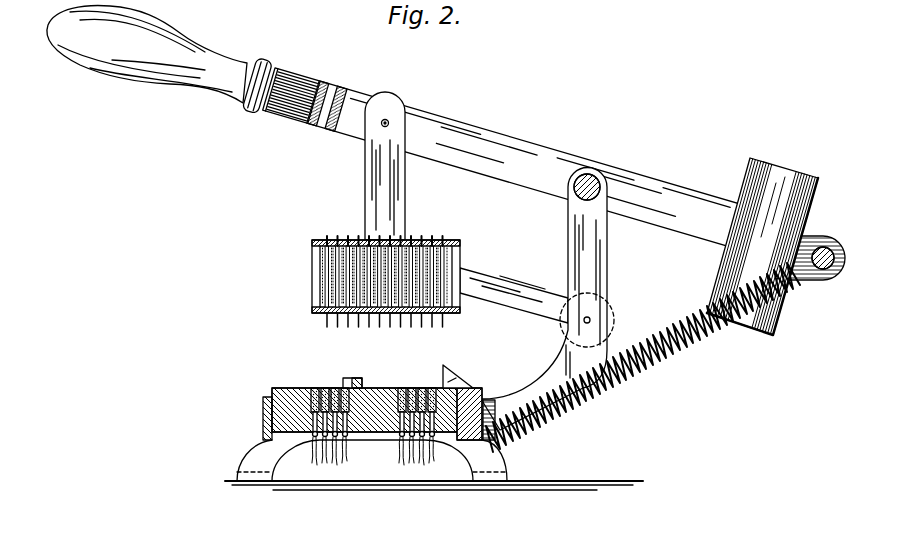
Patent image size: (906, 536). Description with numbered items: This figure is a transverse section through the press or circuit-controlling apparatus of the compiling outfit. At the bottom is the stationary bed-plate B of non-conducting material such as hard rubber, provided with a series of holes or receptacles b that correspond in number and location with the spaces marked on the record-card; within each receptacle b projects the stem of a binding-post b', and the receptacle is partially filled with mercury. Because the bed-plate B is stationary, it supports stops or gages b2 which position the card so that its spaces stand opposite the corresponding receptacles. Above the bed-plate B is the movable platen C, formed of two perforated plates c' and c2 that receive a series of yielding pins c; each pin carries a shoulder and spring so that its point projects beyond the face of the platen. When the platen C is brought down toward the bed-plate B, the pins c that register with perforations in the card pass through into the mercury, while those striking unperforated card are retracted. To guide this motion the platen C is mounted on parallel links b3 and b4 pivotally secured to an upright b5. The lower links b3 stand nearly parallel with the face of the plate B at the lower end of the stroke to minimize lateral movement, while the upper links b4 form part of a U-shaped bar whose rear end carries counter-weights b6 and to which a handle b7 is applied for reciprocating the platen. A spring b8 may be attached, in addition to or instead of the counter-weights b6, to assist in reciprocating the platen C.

The stationary bed-plate B is at (296, 394).
The holes or receptacles b is at (371, 404).
The stem of binding-post b' is at (373, 457).
The stops or gages b2 is at (352, 378).
The lower pair of links b3 is at (510, 299).
The upper pair of links b4 is at (489, 138).
The upright b5 is at (489, 261).
The counter-weights b6 is at (762, 246).
The handle b7 is at (147, 54).
The spring b8 is at (641, 357).
The movable platen C is at (376, 276).
The yielding pins c is at (384, 283).
The upper plate of platen c' is at (381, 234).
The lower plate of platen c2 is at (312, 308).